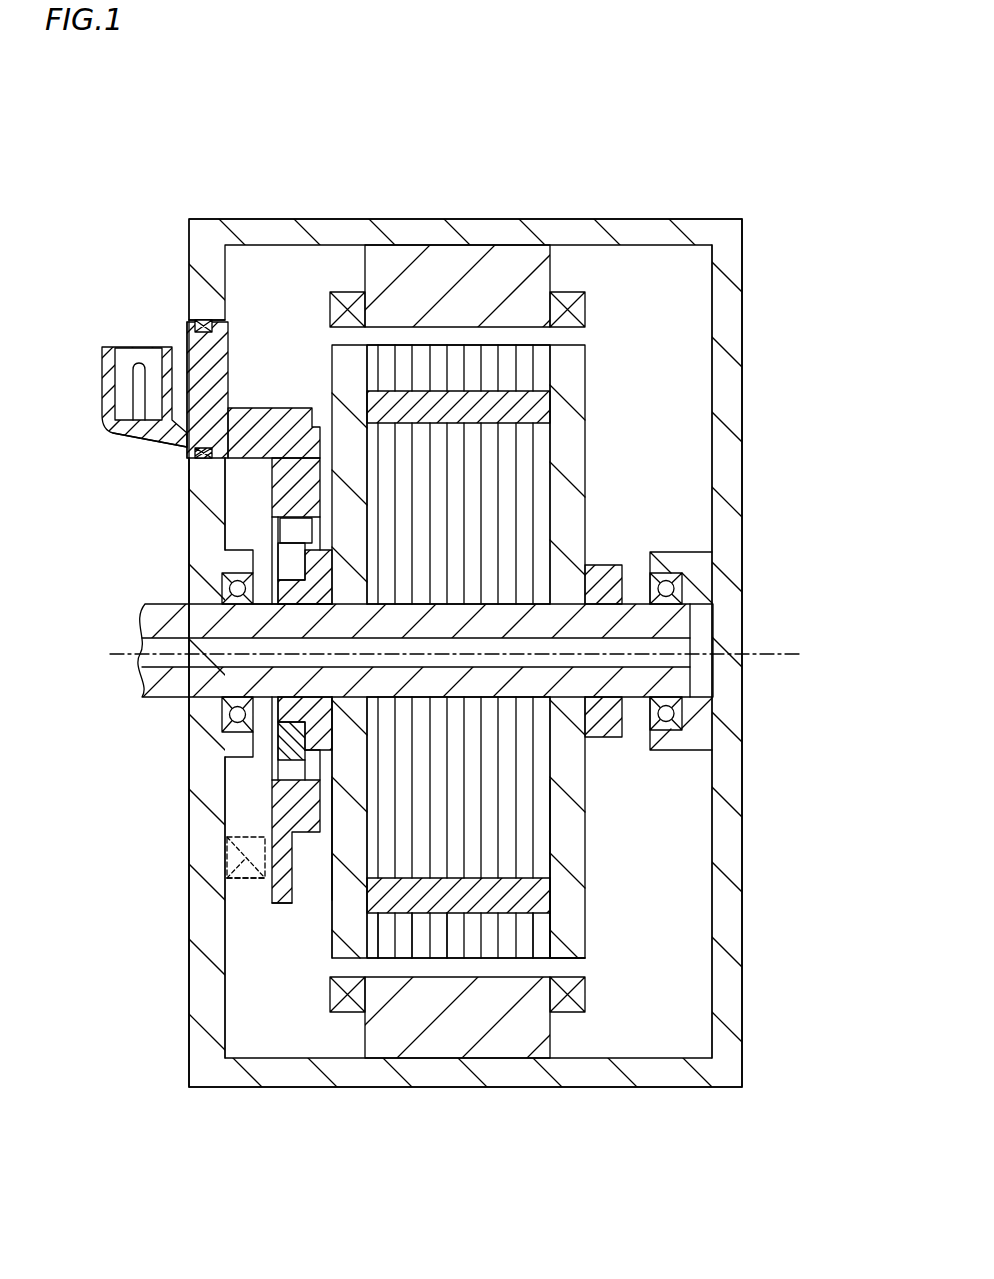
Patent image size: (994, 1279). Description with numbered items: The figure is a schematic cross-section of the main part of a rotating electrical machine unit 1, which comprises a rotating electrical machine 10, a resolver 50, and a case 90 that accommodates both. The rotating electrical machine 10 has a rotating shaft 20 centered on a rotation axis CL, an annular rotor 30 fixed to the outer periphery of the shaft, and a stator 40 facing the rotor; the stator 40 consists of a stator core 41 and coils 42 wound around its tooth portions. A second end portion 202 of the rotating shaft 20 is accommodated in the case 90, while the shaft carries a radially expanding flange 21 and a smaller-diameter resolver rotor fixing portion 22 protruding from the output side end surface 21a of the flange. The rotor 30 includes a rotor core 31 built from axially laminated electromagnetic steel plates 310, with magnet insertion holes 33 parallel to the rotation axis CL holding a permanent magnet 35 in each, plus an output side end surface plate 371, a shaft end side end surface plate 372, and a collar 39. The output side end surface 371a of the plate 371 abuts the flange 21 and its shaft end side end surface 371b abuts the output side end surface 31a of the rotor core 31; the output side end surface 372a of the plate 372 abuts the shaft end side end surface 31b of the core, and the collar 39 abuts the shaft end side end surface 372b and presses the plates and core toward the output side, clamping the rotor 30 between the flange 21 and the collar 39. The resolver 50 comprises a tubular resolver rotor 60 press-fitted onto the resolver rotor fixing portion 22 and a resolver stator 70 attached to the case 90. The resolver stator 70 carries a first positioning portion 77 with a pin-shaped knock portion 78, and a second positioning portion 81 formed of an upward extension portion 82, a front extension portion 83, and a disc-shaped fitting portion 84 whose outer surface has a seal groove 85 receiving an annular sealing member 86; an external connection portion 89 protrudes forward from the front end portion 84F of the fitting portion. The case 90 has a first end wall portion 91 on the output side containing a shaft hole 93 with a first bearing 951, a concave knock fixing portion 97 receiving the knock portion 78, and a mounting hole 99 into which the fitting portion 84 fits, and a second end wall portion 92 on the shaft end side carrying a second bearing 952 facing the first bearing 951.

The rotating electrical machine unit 1 is at (767, 120).
The rotating electrical machine 10 is at (606, 329).
The rotating shaft 20 is at (637, 603).
The flange 21 is at (267, 712).
The output side end surface of the flange 21a is at (288, 752).
The resolver rotor fixing portion 22 is at (290, 735).
The rotor 30 is at (609, 796).
The rotor core 31 is at (480, 972).
The output side end surface of the rotor core 31a is at (381, 965).
The shaft end side end surface of the rotor core 31b is at (518, 955).
The electromagnetic steel plates 310 is at (445, 950).
The magnet insertion holes 33 is at (548, 880).
The permanent magnet 35 is at (548, 895).
The collar 39 is at (606, 563).
The stator 40 is at (582, 275).
The stator core 41 is at (519, 258).
The coils 42 is at (571, 300).
The resolver 50 is at (240, 390).
The resolver rotor 60 is at (283, 540).
The resolver stator 70 is at (270, 812).
The first positioning portion 77 is at (280, 903).
The knock portion 78 is at (227, 856).
The second positioning portion 81 is at (497, 650).
The upward extension portion 82 is at (295, 470).
The front extension portion 83 is at (268, 408).
The fitting portion 84 is at (232, 325).
The front end portion of the fitting portion 84F is at (188, 342).
The seal groove 85 is at (187, 440).
The sealing member 86 is at (203, 322).
The external connection portion 89 is at (102, 357).
The case 90 is at (322, 219).
The first end wall portion 91 is at (210, 982).
The second end wall portion 92 is at (730, 975).
The shaft hole 93 is at (207, 683).
The knock fixing portion 97 is at (263, 878).
The mounting hole 99 is at (185, 320).
The second end portion 202 is at (715, 612).
The output side end surface plate 371 is at (336, 962).
The output side end surface of the output side end surface plate 371a is at (335, 940).
The shaft end side end surface of the output side end surface plate 371b is at (340, 880).
The shaft end side end surface plate 372 is at (578, 956).
The output side end surface of the shaft end side end surface plate 372a is at (550, 928).
The shaft end side end surface of the shaft end side end surface plate 372b is at (575, 958).
The first bearing 951 is at (222, 588).
The second bearing 952 is at (683, 565).
The rotation axis CL is at (110, 652).